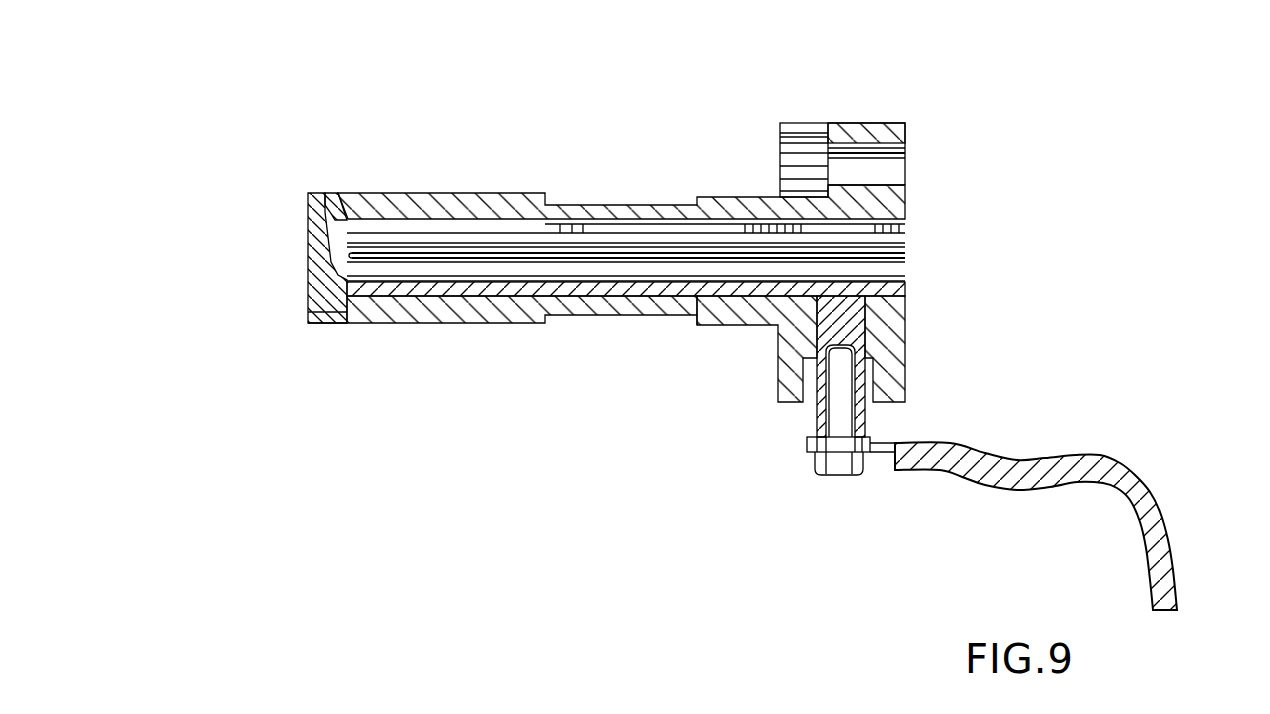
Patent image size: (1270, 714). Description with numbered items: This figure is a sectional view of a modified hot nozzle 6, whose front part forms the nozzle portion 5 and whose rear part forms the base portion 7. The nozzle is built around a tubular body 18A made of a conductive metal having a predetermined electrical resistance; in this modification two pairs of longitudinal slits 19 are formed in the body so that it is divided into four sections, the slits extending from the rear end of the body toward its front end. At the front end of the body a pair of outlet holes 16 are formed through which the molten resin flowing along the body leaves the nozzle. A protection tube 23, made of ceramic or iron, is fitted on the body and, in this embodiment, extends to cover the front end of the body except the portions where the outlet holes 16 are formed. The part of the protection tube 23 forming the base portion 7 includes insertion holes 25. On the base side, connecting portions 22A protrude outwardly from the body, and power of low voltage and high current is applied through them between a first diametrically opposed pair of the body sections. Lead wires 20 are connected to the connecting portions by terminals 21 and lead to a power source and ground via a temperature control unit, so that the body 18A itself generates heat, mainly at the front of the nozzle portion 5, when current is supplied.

The nozzle portion 5 is at (427, 329).
The hot nozzle 6 is at (600, 192).
The base portion 7 is at (848, 120).
The outlet holes 16 is at (323, 210).
The body 18A is at (660, 290).
The longitudinal slits 19 is at (647, 240).
The lead wires 20 is at (1165, 580).
The terminals 21 is at (835, 415).
The connecting portions 22A is at (855, 322).
The protection tube 23 is at (746, 316).
The insertion holes 25 is at (893, 166).